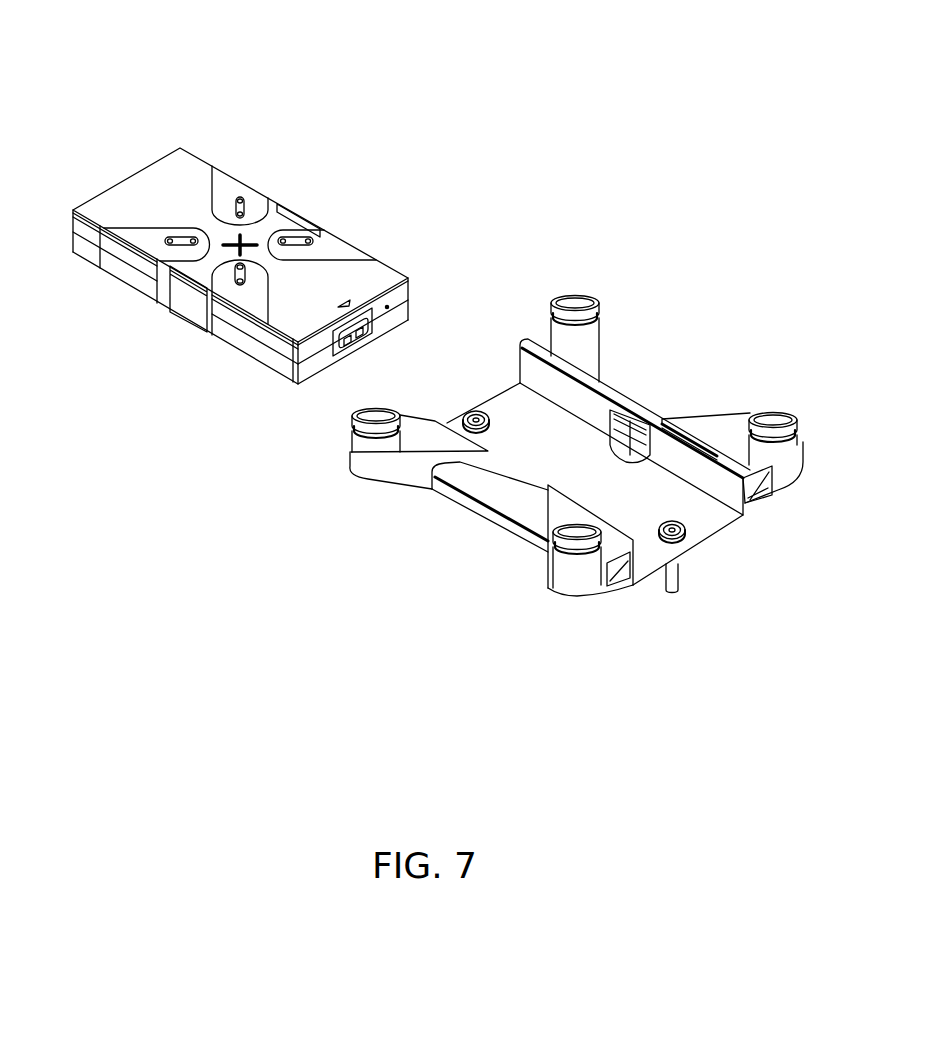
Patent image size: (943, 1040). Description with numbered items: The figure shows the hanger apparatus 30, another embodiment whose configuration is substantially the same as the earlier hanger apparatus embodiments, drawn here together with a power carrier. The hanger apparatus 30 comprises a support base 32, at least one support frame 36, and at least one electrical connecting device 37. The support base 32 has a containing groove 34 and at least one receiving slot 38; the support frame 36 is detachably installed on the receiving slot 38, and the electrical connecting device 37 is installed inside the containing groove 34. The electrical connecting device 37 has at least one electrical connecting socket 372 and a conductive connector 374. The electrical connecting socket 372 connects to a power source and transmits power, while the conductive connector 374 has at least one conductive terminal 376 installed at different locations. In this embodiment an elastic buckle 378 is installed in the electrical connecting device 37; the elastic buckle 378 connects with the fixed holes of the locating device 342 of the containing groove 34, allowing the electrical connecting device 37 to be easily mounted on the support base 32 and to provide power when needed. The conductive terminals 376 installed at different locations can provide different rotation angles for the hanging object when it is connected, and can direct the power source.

The hanger apparatus 30 is at (497, 77).
The support base 32 is at (647, 578).
The containing groove 34 is at (703, 522).
The locating device 342 is at (642, 414).
The support frame 36 is at (617, 388).
The electrical connecting device 37 is at (165, 175).
The electrical connecting socket 372 is at (360, 333).
The conductive connector 374 is at (231, 188).
The conductive terminal 376 is at (287, 237).
The elastic buckle 378 is at (190, 293).
The receiving slot 38 is at (757, 492).